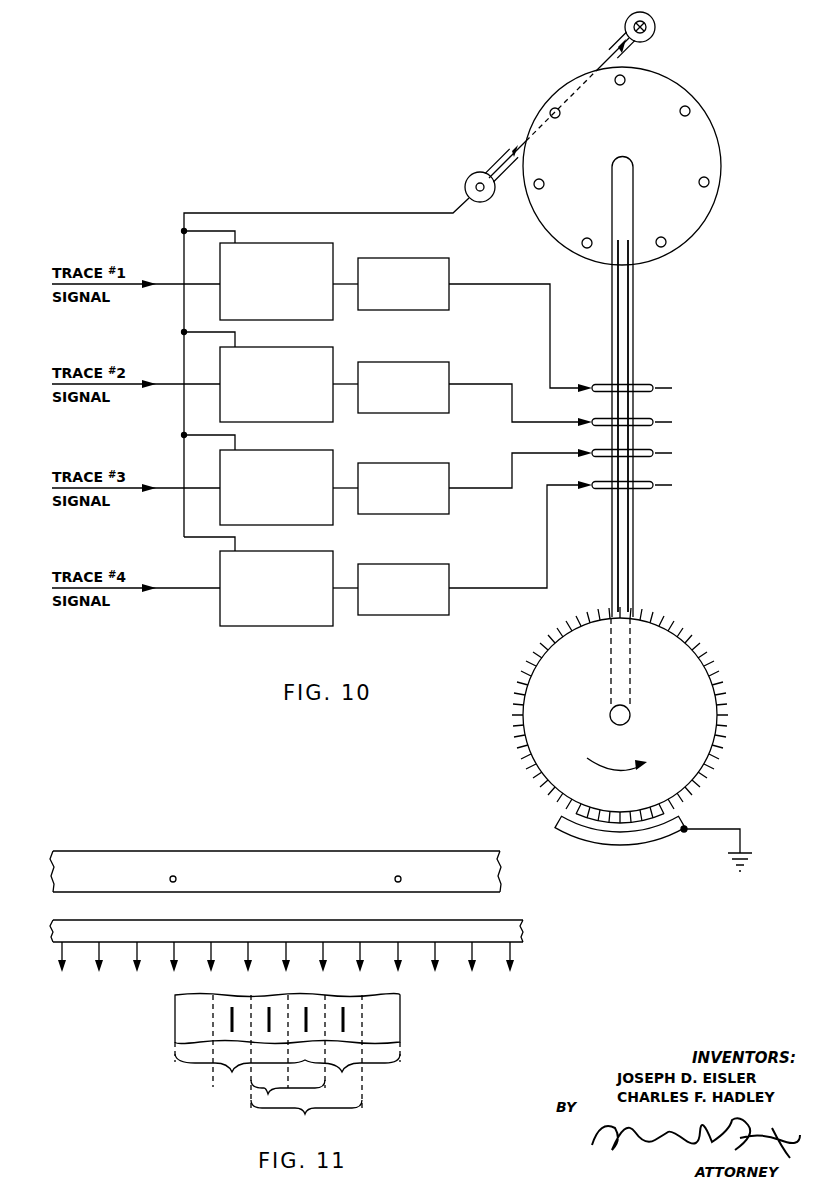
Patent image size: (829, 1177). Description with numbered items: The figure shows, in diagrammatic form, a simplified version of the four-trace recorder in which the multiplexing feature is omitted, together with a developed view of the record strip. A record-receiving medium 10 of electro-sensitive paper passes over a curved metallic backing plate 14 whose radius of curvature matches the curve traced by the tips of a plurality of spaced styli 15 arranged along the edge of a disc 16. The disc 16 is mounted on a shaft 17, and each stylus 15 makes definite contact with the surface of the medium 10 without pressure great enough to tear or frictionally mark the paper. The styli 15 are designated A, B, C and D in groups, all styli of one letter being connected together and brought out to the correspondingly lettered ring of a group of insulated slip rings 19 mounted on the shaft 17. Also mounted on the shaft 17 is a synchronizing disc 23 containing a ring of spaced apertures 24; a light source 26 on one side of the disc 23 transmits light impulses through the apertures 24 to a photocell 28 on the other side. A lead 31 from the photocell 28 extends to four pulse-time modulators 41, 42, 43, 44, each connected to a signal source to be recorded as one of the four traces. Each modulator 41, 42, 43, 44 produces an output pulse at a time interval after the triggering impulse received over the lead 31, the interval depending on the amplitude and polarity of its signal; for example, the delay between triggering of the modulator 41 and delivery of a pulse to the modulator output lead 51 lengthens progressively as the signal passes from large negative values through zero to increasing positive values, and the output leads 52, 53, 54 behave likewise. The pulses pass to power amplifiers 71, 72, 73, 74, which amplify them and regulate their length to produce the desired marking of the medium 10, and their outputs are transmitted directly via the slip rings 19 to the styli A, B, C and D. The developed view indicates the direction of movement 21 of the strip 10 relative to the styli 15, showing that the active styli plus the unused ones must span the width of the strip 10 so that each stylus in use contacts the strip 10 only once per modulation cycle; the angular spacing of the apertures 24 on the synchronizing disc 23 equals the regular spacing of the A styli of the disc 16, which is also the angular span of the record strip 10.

In FIG. 10, the record-receiving medium 10 is at (570, 822).
In FIG. 11, the record-receiving medium 10 is at (400, 1015).
In FIG. 10, the backing plate 14 is at (628, 845).
In FIG. 10, the styli 15 is at (719, 698).
In FIG. 11, the styli 15 is at (137, 973).
In FIG. 10, the disc 16 is at (677, 642).
In FIG. 11, the disc 16 is at (100, 926).
In FIG. 10, the shaft 17 is at (634, 331).
In FIG. 10, the slip rings 19 is at (594, 417).
In FIG. 11, the direction of movement 21 is at (380, 908).
In FIG. 10, the synchronizing disc 23 is at (665, 86).
In FIG. 11, the synchronizing disc 23 is at (240, 858).
In FIG. 10, the apertures 24 is at (708, 178).
In FIG. 11, the apertures 24 is at (170, 875).
In FIG. 10, the light source 26 is at (657, 27).
In FIG. 10, the photocell 28 is at (470, 176).
In FIG. 10, the lead 31 is at (268, 213).
In FIG. 10, the pulse-time modulator 41 is at (292, 243).
In FIG. 10, the pulse-time modulator 42 is at (292, 347).
In FIG. 10, the pulse-time modulator 43 is at (292, 450).
In FIG. 10, the pulse-time modulator 44 is at (292, 551).
In FIG. 10, the modulator output lead 51 is at (340, 284).
In FIG. 10, the modulator output lead 52 is at (340, 384).
In FIG. 10, the modulator output lead 53 is at (340, 488).
In FIG. 10, the modulator output lead 54 is at (340, 588).
In FIG. 10, the power amplifier 71 is at (430, 258).
In FIG. 10, the power amplifier 72 is at (430, 362).
In FIG. 10, the power amplifier 73 is at (430, 463).
In FIG. 10, the power amplifier 74 is at (430, 564).